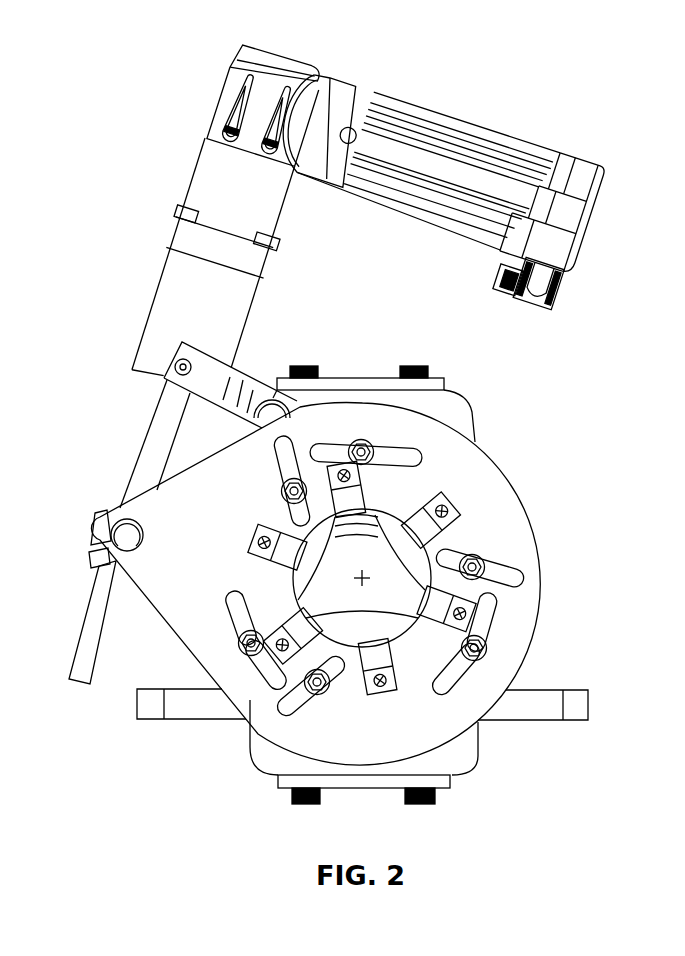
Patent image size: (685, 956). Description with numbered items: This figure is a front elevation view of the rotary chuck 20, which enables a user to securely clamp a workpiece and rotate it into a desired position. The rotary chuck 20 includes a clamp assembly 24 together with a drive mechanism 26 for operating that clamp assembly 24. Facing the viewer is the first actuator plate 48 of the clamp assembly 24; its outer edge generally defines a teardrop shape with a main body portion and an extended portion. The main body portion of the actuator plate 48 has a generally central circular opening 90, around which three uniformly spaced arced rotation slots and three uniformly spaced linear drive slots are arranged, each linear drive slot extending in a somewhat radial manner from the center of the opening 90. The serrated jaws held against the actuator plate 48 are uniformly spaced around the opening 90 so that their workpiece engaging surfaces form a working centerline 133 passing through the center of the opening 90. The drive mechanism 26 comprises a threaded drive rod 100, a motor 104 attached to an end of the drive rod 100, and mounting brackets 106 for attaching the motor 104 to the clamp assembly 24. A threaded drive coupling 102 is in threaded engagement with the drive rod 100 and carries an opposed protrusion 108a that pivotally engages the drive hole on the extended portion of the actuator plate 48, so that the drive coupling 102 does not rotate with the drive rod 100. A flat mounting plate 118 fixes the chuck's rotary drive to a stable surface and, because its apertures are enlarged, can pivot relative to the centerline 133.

The rotary chuck 20 is at (133, 104).
The drive mechanism 26 is at (456, 93).
The motor 104 is at (200, 178).
The mounting brackets 106 is at (243, 390).
The threaded drive rod 100 is at (150, 463).
The threaded drive coupling 102 is at (128, 535).
The protrusion 108a is at (90, 550).
The clamp assembly 24 is at (552, 594).
The first actuator plate 48 is at (478, 483).
The working centerline 133 is at (368, 582).
The mounting plate 118 is at (533, 690).
The central circular opening 90 is at (414, 632).